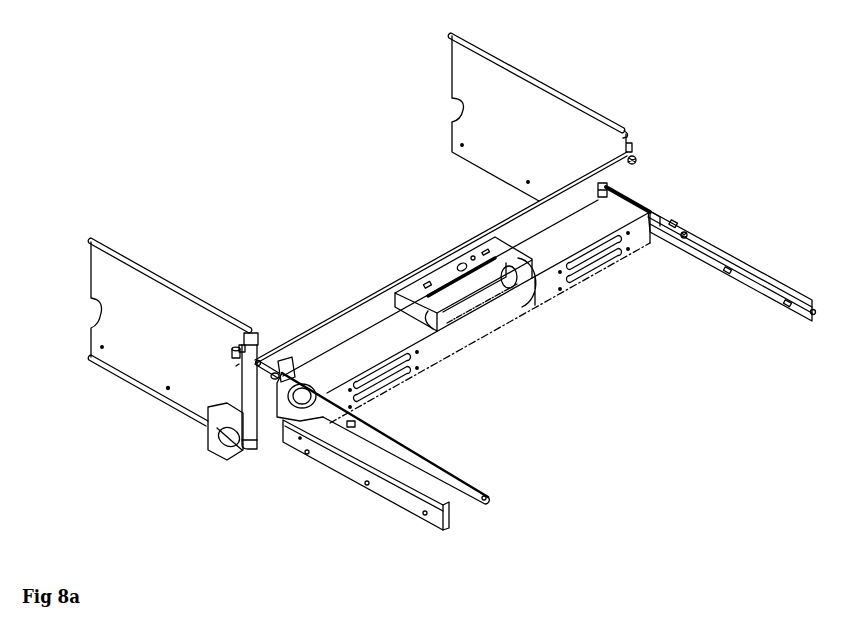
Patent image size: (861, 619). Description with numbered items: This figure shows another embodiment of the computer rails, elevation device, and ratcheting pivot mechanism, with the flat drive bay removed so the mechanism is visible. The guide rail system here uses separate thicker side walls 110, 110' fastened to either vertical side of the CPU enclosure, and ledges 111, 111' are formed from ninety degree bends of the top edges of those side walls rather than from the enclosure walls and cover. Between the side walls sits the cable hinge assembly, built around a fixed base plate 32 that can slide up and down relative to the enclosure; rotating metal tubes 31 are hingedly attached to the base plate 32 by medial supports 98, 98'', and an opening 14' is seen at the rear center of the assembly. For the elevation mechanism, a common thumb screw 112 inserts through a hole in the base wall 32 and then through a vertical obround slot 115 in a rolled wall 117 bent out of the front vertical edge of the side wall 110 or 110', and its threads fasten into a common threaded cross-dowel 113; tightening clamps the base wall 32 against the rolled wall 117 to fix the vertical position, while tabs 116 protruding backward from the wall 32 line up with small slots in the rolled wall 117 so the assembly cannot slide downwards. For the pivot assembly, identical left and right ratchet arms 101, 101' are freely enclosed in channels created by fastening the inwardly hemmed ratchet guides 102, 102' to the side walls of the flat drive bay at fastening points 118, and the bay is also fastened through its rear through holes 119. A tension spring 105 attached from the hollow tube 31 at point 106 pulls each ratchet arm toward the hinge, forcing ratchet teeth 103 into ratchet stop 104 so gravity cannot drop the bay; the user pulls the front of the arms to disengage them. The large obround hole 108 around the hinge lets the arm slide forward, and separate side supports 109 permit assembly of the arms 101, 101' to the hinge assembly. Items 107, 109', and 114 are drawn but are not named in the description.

The opening 14' is at (441, 261).
The rotating metal tube 31 is at (397, 340).
The base plate 32 is at (333, 331).
The medial support 98 is at (442, 284).
The medial support 98'' is at (507, 254).
The ratchet arm 101 is at (398, 462).
The ratchet arm 101' is at (731, 295).
The ratchet guide 102 is at (366, 486).
The ratchet guide 102' is at (743, 265).
The ratchet teeth 103 is at (277, 404).
The ratchet stop 104 is at (236, 366).
The tension spring 105 is at (673, 223).
The attachment point 106 is at (650, 212).
The screw 107 is at (687, 231).
The large hole 108 is at (312, 372).
The side support 109 is at (222, 455).
The corner bracket 109' is at (653, 189).
The side wall 110 is at (137, 350).
The side wall 110' is at (501, 118).
The ledge 111 is at (170, 270).
The ledge 111' is at (503, 85).
The thumb screw 112 is at (258, 360).
The threaded cross-dowel 113 is at (233, 348).
The hole 114 is at (168, 389).
The vertical obround slot 115 is at (241, 346).
The tab 116 is at (267, 440).
The rolled wall 117 is at (254, 333).
The fastening hole 118 is at (425, 515).
The rear through hole 119 is at (417, 369).